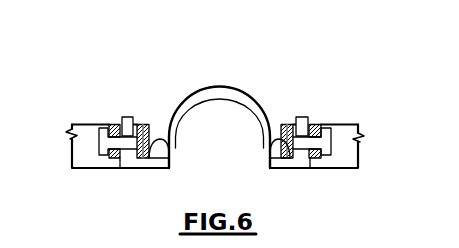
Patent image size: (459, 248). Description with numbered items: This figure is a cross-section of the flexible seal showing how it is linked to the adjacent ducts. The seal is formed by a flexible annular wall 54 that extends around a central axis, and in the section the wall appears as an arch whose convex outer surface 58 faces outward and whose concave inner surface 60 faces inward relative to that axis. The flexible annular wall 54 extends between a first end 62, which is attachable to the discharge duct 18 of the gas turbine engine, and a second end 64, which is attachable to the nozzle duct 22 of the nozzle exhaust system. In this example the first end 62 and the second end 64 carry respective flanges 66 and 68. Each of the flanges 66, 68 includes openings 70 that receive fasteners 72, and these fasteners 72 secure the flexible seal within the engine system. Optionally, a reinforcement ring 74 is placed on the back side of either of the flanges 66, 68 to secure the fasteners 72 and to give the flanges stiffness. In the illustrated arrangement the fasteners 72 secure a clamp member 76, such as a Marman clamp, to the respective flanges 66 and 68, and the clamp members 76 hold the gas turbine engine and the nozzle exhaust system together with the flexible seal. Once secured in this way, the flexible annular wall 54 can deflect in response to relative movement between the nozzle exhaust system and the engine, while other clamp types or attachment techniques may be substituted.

The discharge duct 18 is at (82, 124).
The nozzle duct 22 is at (338, 167).
The flexible annular wall 54 is at (225, 104).
The convex outer surface 58 is at (220, 86).
The concave inner surface 60 is at (228, 103).
The first end 62 is at (109, 128).
The second end 64 is at (314, 112).
The flange 66 is at (123, 117).
The flange 68 is at (302, 117).
The openings 70 is at (127, 138).
The fasteners 72 is at (100, 142).
The reinforcement ring 74 is at (262, 138).
The clamp member 76 is at (115, 160).